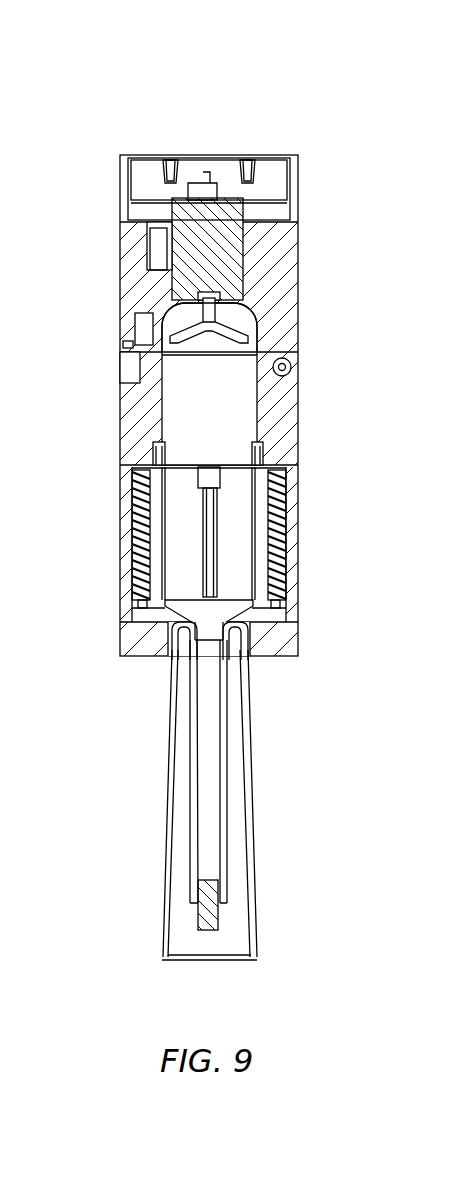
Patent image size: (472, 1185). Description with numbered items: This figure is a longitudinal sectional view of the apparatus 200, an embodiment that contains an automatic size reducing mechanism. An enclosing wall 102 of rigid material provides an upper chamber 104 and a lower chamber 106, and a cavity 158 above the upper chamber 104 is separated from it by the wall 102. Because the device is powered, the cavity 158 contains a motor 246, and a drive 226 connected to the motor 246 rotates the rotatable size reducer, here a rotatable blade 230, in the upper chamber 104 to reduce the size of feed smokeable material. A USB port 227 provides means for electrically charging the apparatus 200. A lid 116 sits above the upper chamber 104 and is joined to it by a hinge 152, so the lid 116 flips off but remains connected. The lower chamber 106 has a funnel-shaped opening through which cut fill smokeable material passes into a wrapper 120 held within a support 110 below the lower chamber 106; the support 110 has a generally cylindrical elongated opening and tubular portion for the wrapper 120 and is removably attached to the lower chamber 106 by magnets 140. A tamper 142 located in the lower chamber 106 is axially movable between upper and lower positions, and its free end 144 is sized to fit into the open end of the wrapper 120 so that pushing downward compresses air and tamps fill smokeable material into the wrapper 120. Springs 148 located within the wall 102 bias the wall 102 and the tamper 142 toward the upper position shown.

The apparatus 200 is at (291, 105).
The wall 102 is at (120, 393).
The upper chamber 104 is at (236, 418).
The lower chamber 106 is at (233, 523).
The support 110 is at (236, 857).
The lid 116 is at (296, 182).
The wrapper 120 is at (207, 730).
The magnets 140 is at (172, 655).
The tamper 142 is at (210, 527).
The free end 144 is at (205, 575).
The springs 148 is at (140, 562).
The hinge 152 is at (291, 365).
The cavity 158 is at (243, 271).
The drive 226 is at (148, 322).
The USB port 227 is at (157, 252).
The rotatable blade 230 is at (163, 316).
The motor 246 is at (228, 258).